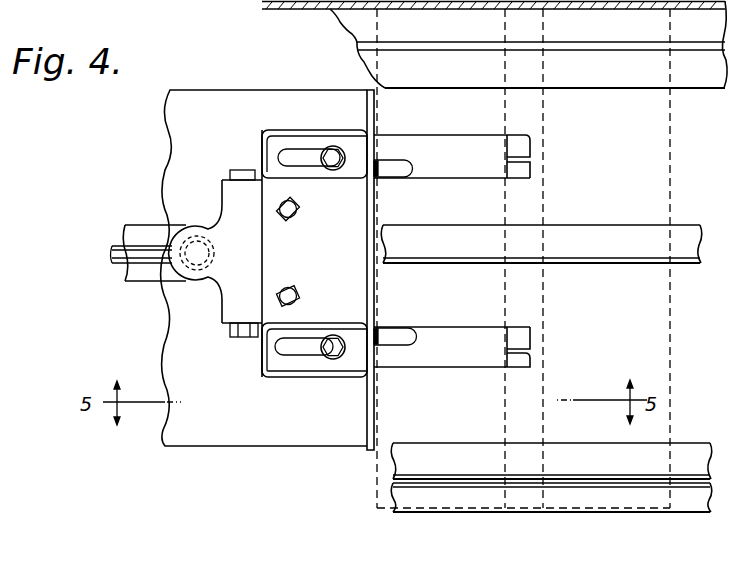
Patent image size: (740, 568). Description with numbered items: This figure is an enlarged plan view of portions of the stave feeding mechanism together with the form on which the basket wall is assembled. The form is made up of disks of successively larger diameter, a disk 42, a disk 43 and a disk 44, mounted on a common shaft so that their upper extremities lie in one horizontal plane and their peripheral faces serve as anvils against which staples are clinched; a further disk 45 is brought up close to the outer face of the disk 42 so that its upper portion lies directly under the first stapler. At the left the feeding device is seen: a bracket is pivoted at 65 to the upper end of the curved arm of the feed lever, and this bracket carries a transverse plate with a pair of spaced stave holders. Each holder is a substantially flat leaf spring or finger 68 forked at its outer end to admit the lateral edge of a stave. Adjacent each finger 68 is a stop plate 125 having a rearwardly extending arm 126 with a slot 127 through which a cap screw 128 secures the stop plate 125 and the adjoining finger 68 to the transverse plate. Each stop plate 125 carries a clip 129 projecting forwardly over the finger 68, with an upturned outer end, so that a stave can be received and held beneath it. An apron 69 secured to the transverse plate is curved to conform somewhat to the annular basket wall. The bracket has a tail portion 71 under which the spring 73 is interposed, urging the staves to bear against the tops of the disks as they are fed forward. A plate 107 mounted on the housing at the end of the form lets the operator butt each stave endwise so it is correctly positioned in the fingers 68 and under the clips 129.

The disk 42 is at (688, 446).
The disk 43 is at (599, 237).
The disk 44 is at (577, 33).
The disk 45 is at (692, 502).
The pivot 65 is at (242, 338).
The finger 68 is at (457, 163).
The apron 69 is at (272, 432).
The tail portion 71 is at (178, 284).
The spring 73 is at (212, 241).
The plate 107 is at (312, 10).
The stop plate 125 is at (375, 395).
The arm 126 is at (288, 143).
The slot 127 is at (287, 158).
The cap screw 128 is at (332, 163).
The clip 129 is at (388, 168).